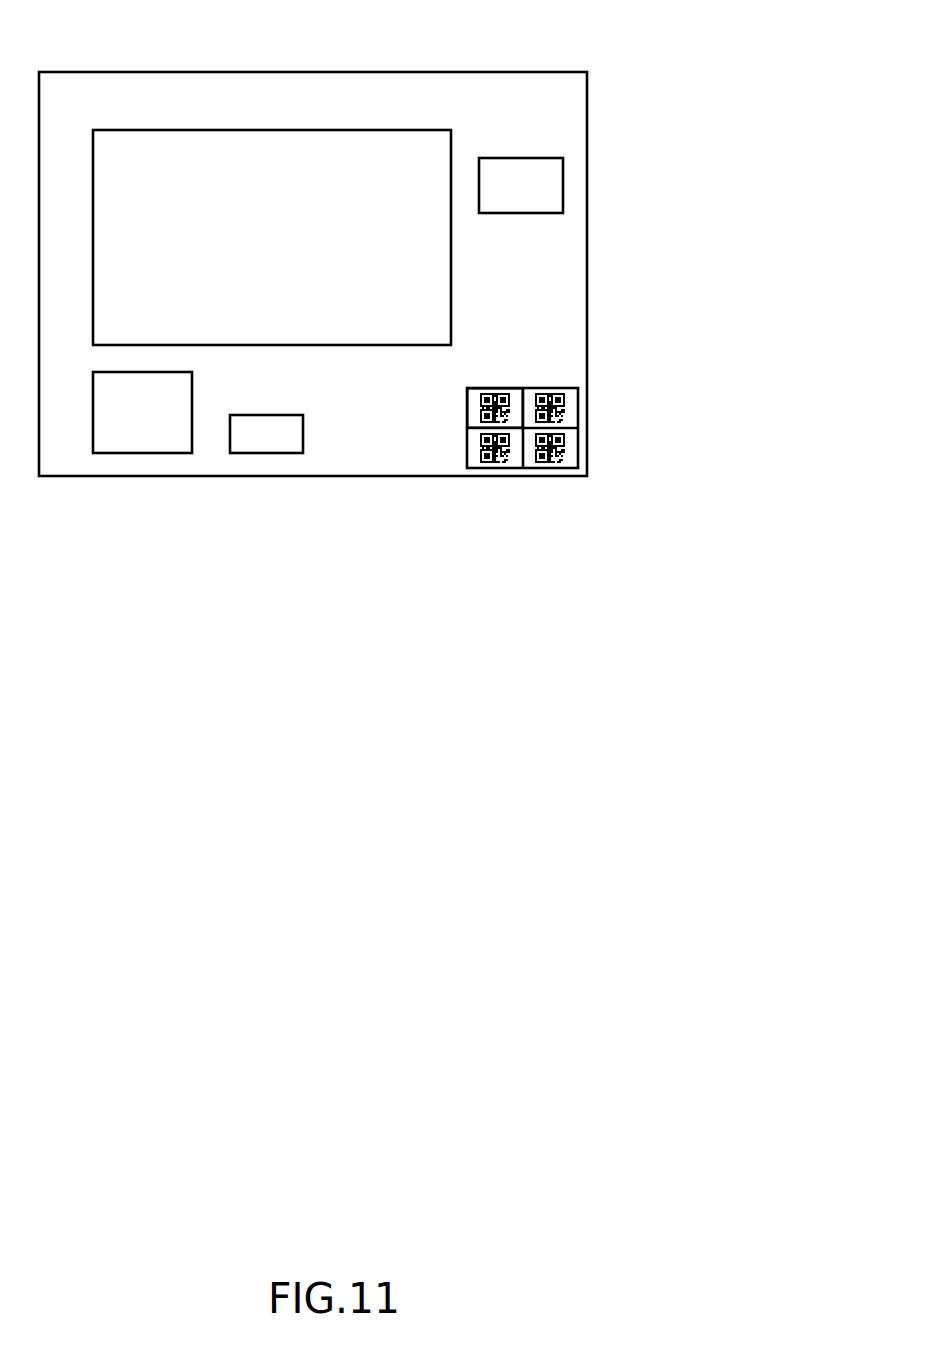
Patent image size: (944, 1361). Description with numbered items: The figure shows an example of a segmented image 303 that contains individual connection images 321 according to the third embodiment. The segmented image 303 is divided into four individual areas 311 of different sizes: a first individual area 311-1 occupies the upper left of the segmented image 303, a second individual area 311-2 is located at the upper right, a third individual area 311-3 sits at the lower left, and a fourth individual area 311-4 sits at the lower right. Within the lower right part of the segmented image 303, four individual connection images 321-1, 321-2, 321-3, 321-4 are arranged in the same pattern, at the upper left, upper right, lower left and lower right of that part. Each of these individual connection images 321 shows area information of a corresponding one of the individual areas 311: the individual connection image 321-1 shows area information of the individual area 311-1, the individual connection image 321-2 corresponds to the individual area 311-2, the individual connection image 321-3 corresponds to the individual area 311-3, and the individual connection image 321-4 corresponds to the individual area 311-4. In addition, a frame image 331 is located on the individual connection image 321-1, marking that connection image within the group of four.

The segmented image 303 is at (553, 73).
The individual areas 311 is at (363, 68).
The individual area 311-1 is at (260, 130).
The individual area 311-2 is at (490, 158).
The individual area 311-3 is at (133, 453).
The individual area 311-4 is at (272, 453).
The individual connection images 321 is at (595, 413).
The individual connection image 321-1 is at (497, 388).
The individual connection image 321-2 is at (552, 388).
The individual connection image 321-3 is at (497, 468).
The individual connection image 321-4 is at (552, 468).
The frame image 331 is at (510, 388).